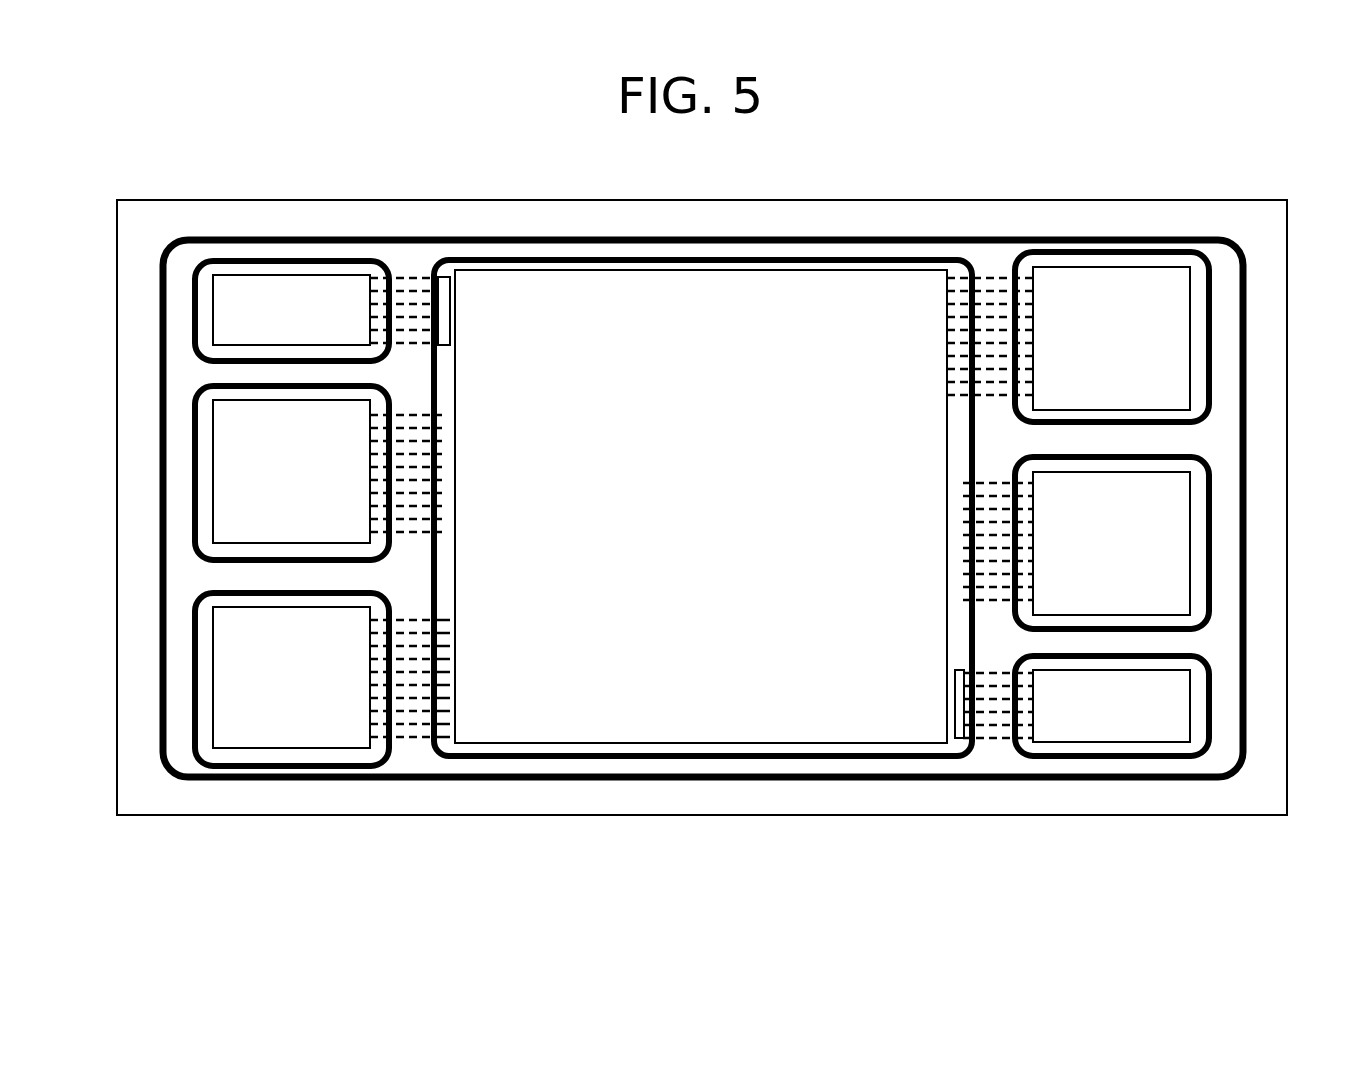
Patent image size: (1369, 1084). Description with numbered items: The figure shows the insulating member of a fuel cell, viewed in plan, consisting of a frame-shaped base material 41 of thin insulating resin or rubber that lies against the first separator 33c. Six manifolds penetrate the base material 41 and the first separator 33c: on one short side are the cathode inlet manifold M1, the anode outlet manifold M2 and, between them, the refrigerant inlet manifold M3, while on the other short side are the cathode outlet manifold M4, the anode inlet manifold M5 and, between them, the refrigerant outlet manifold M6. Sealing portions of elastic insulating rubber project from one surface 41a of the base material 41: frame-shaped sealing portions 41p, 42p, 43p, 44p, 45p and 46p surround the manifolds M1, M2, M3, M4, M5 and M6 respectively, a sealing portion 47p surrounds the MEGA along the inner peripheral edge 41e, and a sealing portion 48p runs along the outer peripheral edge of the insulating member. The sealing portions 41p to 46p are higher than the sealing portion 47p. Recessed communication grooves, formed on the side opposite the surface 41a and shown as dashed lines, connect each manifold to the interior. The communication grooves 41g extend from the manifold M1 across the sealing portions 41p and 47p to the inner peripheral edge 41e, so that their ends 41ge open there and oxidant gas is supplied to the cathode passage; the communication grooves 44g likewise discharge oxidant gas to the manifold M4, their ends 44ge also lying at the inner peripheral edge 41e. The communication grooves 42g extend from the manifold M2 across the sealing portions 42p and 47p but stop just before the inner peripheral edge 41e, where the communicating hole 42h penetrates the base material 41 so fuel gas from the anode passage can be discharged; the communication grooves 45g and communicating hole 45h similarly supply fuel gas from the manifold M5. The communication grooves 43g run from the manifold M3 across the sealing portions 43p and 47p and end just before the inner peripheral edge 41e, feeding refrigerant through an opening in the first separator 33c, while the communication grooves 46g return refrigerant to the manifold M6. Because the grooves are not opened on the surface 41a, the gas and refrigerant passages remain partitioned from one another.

The first separator 33c is at (563, 819).
The base material 41 is at (496, 221).
The one surface of the base material 41a is at (708, 792).
The inner peripheral edge 41e is at (572, 742).
The communication grooves 41g is at (397, 728).
The ends of the communication grooves 41g 41ge is at (458, 686).
The sealing portion 41p is at (188, 660).
The communication grooves 42g is at (403, 277).
The communicating hole 42h is at (445, 277).
The sealing portion 42p is at (188, 313).
The communication grooves 43g is at (370, 438).
The sealing portion 43p is at (188, 522).
The communication grooves 44g is at (1002, 280).
The ends of the communication grooves 44g 44ge is at (947, 337).
The sealing portion 44p is at (1215, 313).
The communication grooves 45g is at (1017, 757).
The communicating hole 45h is at (955, 738).
The sealing portion 45p is at (1208, 662).
The communication grooves 46g is at (1033, 490).
The sealing portion 46p is at (1215, 573).
The sealing portion 47p is at (838, 258).
The sealing portion 48p is at (778, 782).
The manifold M1 is at (250, 720).
The manifold M2 is at (250, 298).
The manifold M3 is at (267, 495).
The manifold M4 is at (1152, 295).
The manifold M5 is at (1152, 717).
The manifold M6 is at (1133, 547).